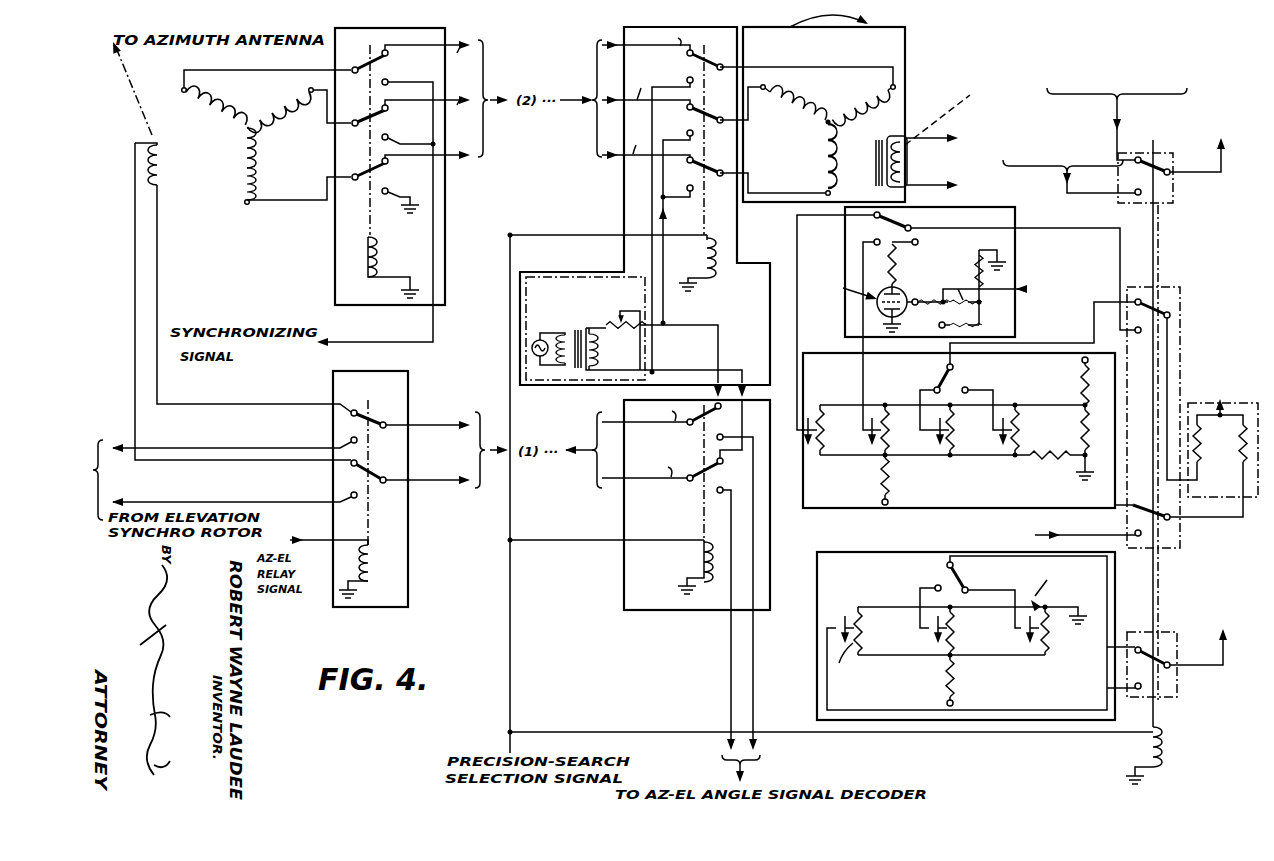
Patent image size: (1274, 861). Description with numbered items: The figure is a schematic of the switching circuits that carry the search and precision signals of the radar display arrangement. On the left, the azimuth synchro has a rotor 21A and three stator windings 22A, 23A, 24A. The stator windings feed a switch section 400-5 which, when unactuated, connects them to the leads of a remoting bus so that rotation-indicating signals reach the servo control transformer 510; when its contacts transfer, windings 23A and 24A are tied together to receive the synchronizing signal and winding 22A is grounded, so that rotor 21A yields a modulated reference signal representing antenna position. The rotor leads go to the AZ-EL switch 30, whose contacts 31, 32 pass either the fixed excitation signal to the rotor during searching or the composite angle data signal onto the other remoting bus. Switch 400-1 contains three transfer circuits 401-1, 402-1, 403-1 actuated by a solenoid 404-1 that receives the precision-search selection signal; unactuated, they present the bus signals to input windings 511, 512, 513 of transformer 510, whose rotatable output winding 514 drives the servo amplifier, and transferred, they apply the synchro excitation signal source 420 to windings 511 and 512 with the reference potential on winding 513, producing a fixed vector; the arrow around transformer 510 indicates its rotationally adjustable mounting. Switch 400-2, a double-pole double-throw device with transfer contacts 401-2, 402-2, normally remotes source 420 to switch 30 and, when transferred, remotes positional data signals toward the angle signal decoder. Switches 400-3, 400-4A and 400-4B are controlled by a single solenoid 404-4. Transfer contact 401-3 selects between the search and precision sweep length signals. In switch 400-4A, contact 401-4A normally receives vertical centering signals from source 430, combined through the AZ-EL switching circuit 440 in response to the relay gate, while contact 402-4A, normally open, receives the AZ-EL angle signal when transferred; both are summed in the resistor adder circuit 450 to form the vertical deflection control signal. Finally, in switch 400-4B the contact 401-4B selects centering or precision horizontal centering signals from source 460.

The rotor of azimuth synchro 21A is at (165, 167).
The stator winding 22A is at (252, 161).
The stator winding 23A is at (214, 107).
The stator winding 24A is at (282, 112).
The AZ-EL switch 30 is at (291, 489).
The contact of AZ-EL switch 31 is at (384, 429).
The contact of AZ-EL switch 32 is at (384, 484).
The switch 400-1 is at (706, 202).
The transfer circuit 401-1 is at (709, 55).
The transfer circuit 402-1 is at (709, 105).
The transfer circuit 403-1 is at (709, 161).
The solenoid 404-1 is at (718, 264).
The switch 400-2 is at (657, 575).
The transfer contact 401-2 is at (693, 428).
The transfer contact 402-2 is at (691, 484).
The switch 400-3 is at (1120, 133).
The transfer contact 401-3 is at (1120, 181).
The switch 400-4A is at (1197, 410).
The transfer contact 401-4A is at (1150, 304).
The transfer contact 402-4A is at (1170, 520).
The switch 400-4B is at (1193, 628).
The transfer contact 401-4B is at (1166, 662).
The solenoid 404-4 is at (1163, 746).
The switch section 400-5 is at (335, 259).
The synchro excitation signal source 420 is at (648, 348).
The source of vertical centering signals 430 is at (1010, 501).
The AZ-EL switching circuit 440 is at (1005, 222).
The resistor adder circuit 450 is at (1255, 497).
The source of horizontal centering signals 460 is at (1027, 712).
The servo control transformer 510 is at (873, 108).
The input winding 511 is at (822, 156).
The input winding 512 is at (800, 98).
The input winding 513 is at (853, 98).
The rotatable output winding 514 is at (874, 172).